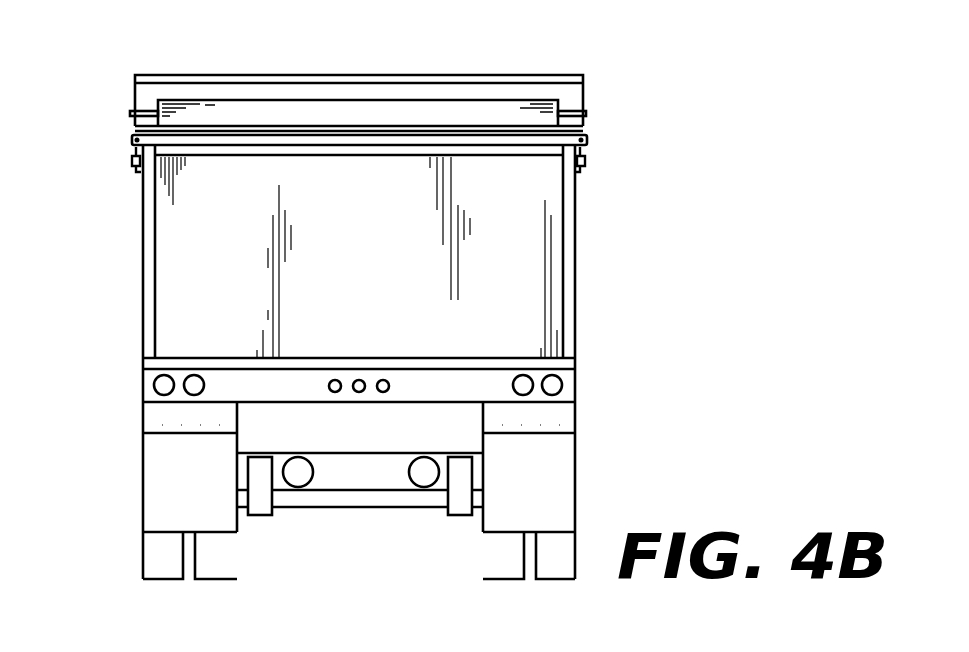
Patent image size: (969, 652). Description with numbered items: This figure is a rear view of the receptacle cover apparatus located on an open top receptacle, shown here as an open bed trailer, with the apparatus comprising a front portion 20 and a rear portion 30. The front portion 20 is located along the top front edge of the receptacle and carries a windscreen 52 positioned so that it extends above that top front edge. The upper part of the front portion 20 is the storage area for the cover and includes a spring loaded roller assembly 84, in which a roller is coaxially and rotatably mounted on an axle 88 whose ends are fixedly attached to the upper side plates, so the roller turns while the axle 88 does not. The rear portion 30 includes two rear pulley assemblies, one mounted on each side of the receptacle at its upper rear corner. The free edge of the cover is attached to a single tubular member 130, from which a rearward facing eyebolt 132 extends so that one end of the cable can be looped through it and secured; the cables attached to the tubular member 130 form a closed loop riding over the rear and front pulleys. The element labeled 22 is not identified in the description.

The front portion 20 is at (361, 122).
The truck body / container 22 is at (590, 178).
The rear portion 30 is at (607, 153).
The windscreen 52 is at (268, 78).
The spring loaded roller assembly 84 is at (203, 110).
The axle 88 is at (587, 115).
The tubular member 130 is at (131, 140).
The eyebolt 132 is at (128, 165).